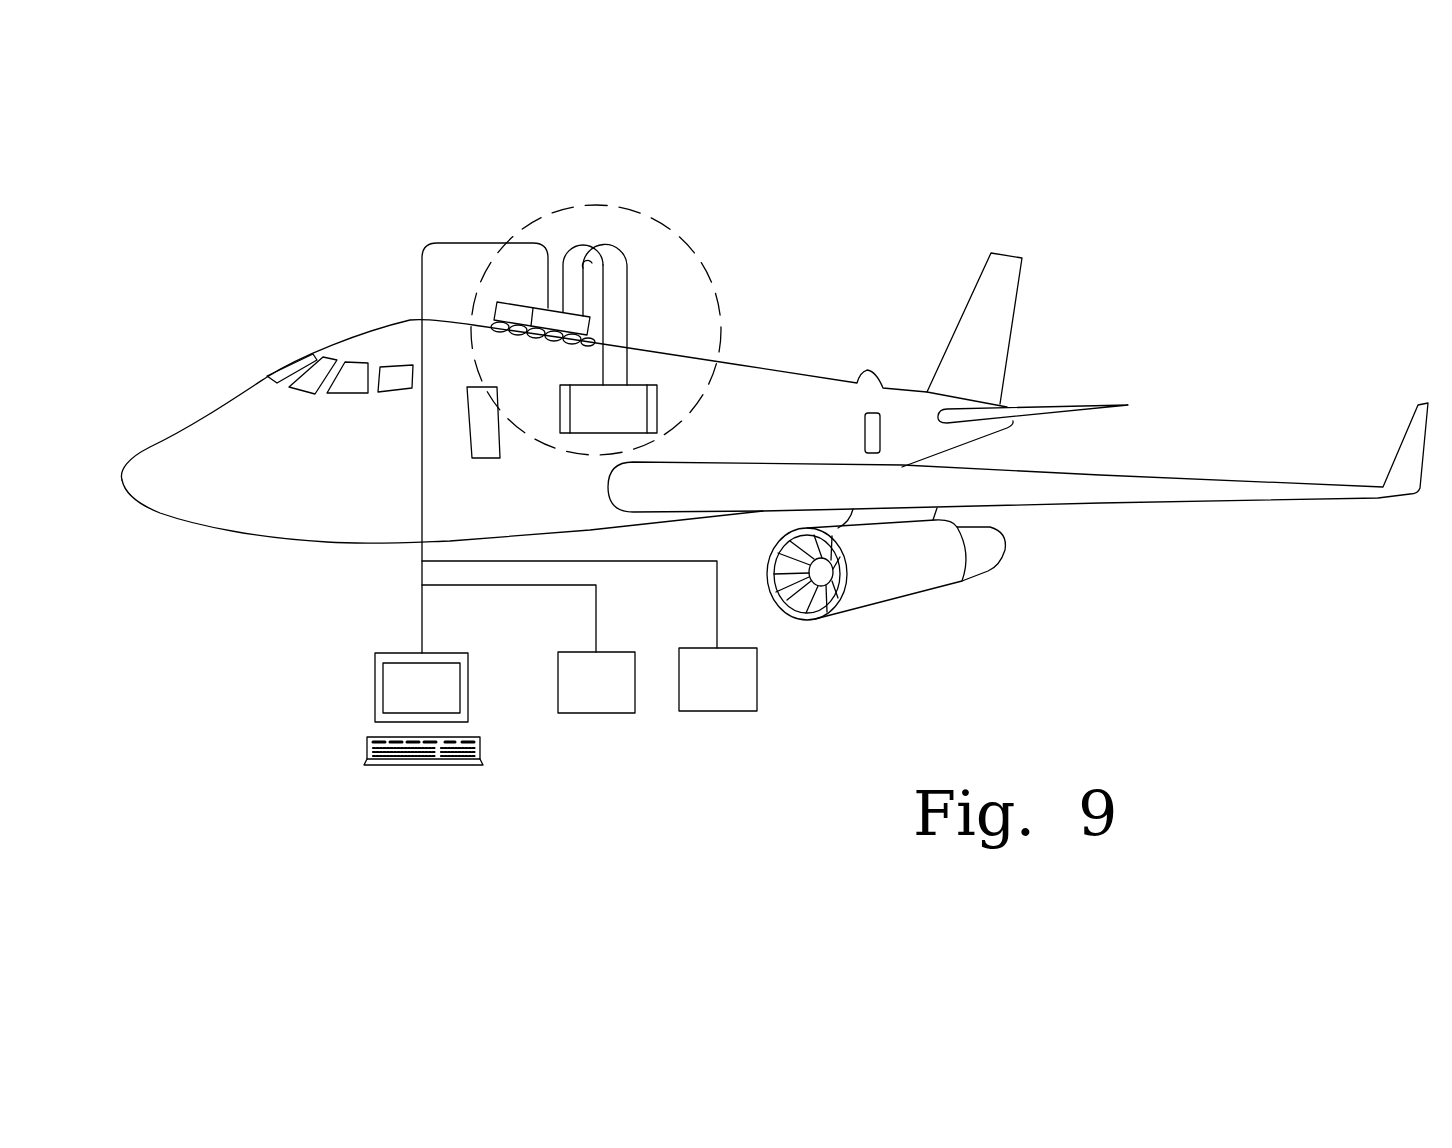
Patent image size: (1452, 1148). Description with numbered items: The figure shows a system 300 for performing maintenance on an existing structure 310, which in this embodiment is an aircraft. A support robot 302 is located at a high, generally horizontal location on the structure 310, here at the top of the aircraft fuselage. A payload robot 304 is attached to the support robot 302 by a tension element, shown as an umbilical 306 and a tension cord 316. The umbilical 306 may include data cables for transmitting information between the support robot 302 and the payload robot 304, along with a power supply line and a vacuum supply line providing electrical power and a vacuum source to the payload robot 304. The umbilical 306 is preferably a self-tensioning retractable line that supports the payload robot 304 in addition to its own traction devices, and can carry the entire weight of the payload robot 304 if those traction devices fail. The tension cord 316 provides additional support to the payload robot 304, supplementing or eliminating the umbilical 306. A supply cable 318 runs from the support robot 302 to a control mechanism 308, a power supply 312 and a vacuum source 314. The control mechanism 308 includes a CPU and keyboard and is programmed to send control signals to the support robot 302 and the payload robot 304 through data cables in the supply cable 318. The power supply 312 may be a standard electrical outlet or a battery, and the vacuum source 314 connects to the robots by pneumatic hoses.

The system 300 is at (617, 200).
The support robot 302 is at (512, 298).
The payload robot 304 is at (645, 387).
The umbilical 306 is at (578, 245).
The control mechanism 308 is at (375, 678).
The structure 310 is at (1188, 476).
The power supply 312 is at (727, 711).
The vacuum source 314 is at (612, 716).
The tension cord 316 is at (628, 265).
The supply cable 318 is at (420, 292).